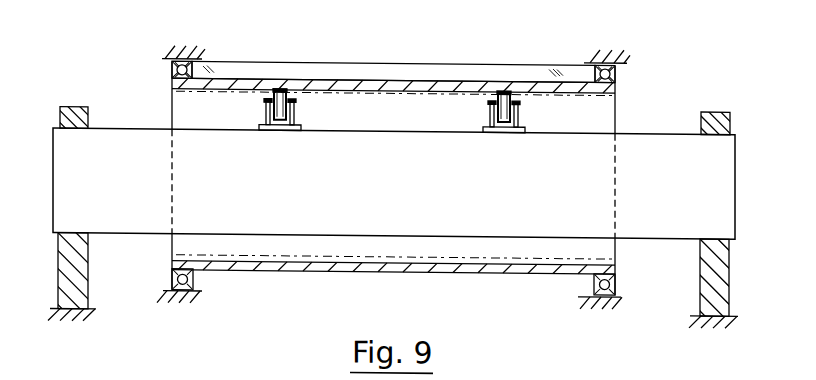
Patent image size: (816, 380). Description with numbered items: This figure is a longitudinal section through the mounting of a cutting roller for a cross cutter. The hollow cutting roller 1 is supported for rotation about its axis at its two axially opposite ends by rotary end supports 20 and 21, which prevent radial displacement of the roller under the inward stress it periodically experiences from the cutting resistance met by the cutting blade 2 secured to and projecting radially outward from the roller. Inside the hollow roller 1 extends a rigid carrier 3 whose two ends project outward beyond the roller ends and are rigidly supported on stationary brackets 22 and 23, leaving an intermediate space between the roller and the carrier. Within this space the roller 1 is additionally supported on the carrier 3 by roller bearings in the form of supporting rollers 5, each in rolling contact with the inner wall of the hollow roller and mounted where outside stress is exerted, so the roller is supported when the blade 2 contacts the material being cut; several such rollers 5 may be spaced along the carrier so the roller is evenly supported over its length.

The cutting roller 1 is at (419, 81).
The cutting blade 2 is at (236, 65).
The carrier 3 is at (138, 234).
The supporting roller 5 is at (290, 85).
The rotary end support 20 is at (183, 41).
The rotary end support 21 is at (612, 39).
The stationary bracket 22 is at (68, 107).
The stationary bracket 23 is at (716, 106).